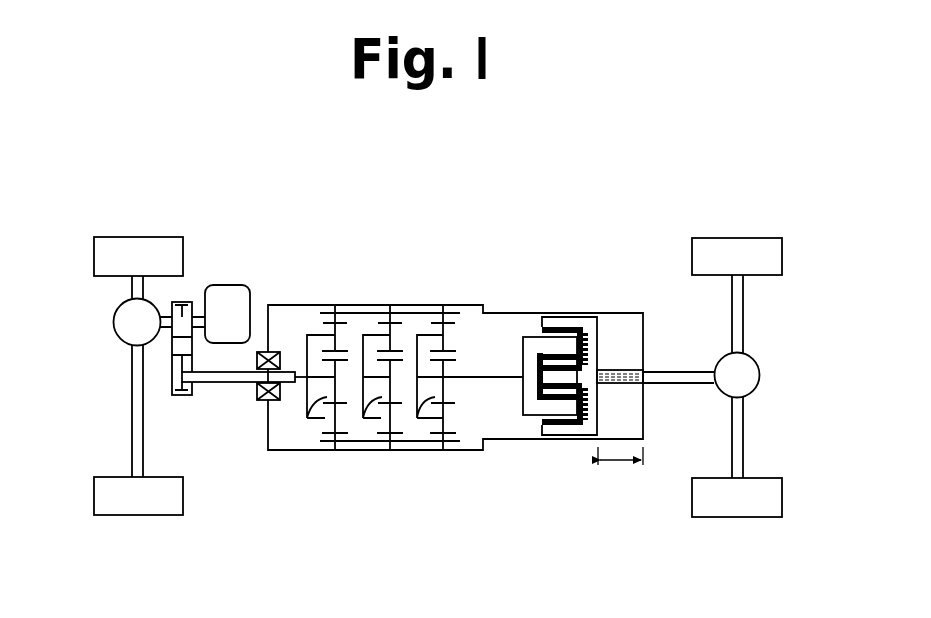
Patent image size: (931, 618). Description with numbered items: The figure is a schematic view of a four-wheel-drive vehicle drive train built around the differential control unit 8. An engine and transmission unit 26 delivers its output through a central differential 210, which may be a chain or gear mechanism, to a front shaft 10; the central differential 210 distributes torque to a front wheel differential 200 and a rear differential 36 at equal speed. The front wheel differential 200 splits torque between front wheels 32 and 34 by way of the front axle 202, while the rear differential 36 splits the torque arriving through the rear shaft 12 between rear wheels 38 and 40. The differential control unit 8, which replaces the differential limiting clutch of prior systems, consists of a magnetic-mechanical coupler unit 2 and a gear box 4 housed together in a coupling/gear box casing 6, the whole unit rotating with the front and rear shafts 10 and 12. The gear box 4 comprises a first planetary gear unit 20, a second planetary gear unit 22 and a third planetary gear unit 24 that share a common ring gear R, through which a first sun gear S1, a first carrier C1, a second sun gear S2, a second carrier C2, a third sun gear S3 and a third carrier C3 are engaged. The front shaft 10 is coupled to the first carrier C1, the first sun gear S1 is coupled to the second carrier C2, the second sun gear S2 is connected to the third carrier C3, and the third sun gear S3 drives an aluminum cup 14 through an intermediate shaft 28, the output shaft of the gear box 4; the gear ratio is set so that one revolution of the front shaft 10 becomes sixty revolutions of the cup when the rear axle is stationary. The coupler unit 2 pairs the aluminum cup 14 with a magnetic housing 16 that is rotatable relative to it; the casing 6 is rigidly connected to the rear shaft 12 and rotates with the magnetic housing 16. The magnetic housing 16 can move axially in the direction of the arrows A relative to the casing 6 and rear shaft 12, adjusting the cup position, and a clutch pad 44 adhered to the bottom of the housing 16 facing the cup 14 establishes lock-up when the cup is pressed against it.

The magnetic-mechanical coupler unit 2 is at (575, 377).
The gear box 4 is at (373, 324).
The coupling/gear box casing 6 is at (470, 303).
The differential control unit 8 is at (447, 286).
The front shaft 10 is at (233, 383).
The rear shaft 12 is at (675, 372).
The aluminum cup 14 is at (533, 350).
The magnetic housing 16 is at (565, 433).
The first planetary gear unit 20 is at (318, 324).
The second planetary gear unit 22 is at (362, 326).
The third planetary gear unit 24 is at (432, 326).
The engine and transmission unit 26 is at (242, 327).
The intermediate shaft 28 is at (490, 378).
The front wheel 32 is at (130, 237).
The front wheel 34 is at (131, 515).
The rear differential 36 is at (760, 375).
The rear wheel 38 is at (741, 238).
The rear wheel 40 is at (750, 518).
The clutch pad 44 is at (585, 345).
The front wheel differential 200 is at (115, 315).
The front axle 202 is at (133, 378).
The central differential 210 is at (195, 396).
The first sun gear S1 is at (308, 422).
The first carrier C1 is at (308, 450).
The second sun gear S2 is at (360, 445).
The ring gear R is at (373, 441).
The second carrier C2 is at (398, 441).
The third sun gear S3 is at (422, 441).
The third carrier C3 is at (453, 441).
The arrows A is at (620, 466).